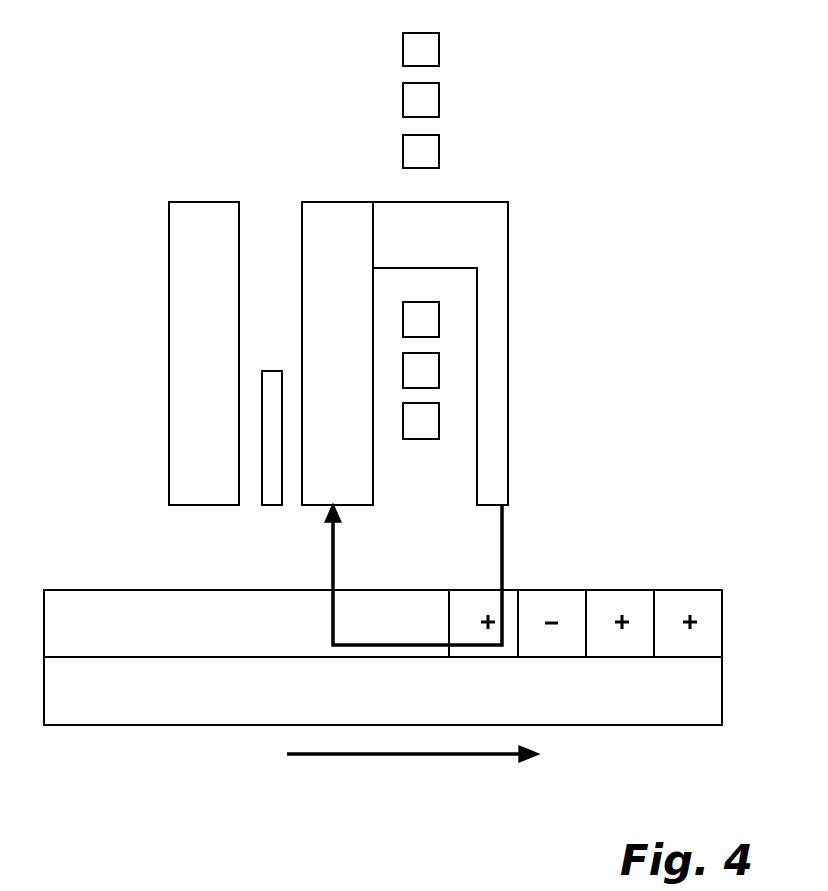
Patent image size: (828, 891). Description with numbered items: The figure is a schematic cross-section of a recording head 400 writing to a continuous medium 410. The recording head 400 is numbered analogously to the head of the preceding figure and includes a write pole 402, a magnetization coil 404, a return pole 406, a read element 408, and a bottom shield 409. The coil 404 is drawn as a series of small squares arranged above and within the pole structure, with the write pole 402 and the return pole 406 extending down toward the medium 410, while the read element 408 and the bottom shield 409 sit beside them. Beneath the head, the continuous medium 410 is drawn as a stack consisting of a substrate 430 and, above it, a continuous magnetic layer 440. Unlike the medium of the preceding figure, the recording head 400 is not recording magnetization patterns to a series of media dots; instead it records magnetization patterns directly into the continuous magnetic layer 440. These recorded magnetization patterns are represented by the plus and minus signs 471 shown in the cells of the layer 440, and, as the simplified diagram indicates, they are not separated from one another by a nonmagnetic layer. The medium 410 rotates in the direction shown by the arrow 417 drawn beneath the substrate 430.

The recording head 400 is at (533, 186).
The write pole 402 is at (505, 298).
The magnetization coil 404 is at (408, 360).
The return pole 406 is at (316, 257).
The read element 408 is at (270, 437).
The bottom shield 409 is at (183, 280).
The continuous medium 410 is at (723, 680).
The arrow 417 is at (361, 756).
The substrate 430 is at (108, 692).
The continuous magnetic layer 440 is at (150, 608).
The "+" and "−" signs 471 is at (668, 598).